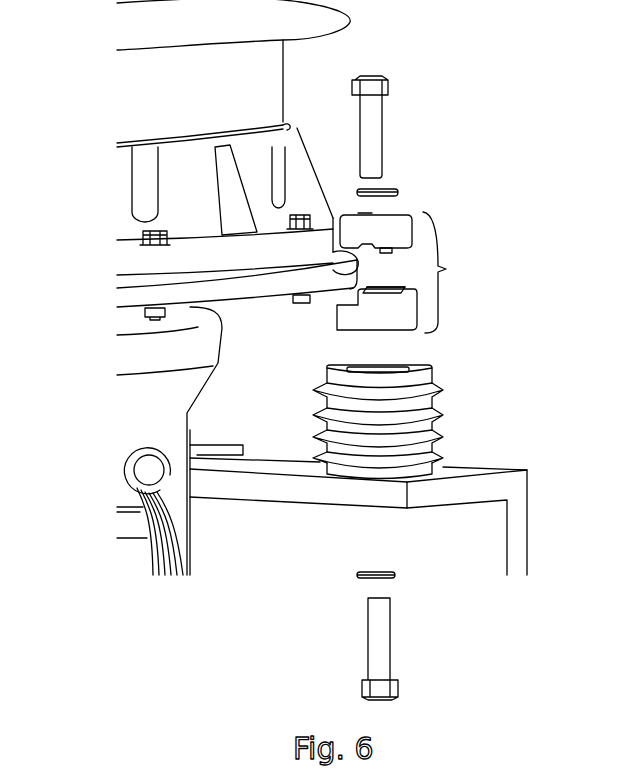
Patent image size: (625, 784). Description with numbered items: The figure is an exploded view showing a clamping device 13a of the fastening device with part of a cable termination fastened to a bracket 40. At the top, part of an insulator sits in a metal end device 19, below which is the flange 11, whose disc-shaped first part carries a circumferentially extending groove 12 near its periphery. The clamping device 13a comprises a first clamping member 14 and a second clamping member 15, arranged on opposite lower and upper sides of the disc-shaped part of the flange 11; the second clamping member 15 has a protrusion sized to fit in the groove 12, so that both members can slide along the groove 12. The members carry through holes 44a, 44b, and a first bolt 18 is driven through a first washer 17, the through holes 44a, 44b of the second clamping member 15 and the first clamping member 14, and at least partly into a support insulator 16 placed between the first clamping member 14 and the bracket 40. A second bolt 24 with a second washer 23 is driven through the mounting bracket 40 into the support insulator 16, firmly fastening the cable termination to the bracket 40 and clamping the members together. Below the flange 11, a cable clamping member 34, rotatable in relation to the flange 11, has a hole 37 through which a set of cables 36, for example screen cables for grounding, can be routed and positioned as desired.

The flange 11 is at (263, 307).
The circumferentially extending groove 12 is at (330, 264).
The clamping device 13a is at (460, 272).
The first clamping member 14 is at (392, 323).
The second clamping member 15 is at (413, 226).
The support insulator 16 is at (436, 409).
The first washer 17 is at (398, 190).
The first bolt 18 is at (370, 120).
The end device 19 is at (300, 140).
The second washer 23 is at (395, 578).
The second bolt 24 is at (384, 647).
The cable clamping member 34 is at (193, 522).
The cables 36 is at (152, 565).
The hole 37 is at (128, 452).
The bracket 40 is at (524, 528).
The through hole 44a is at (373, 214).
The through hole 44b is at (394, 290).